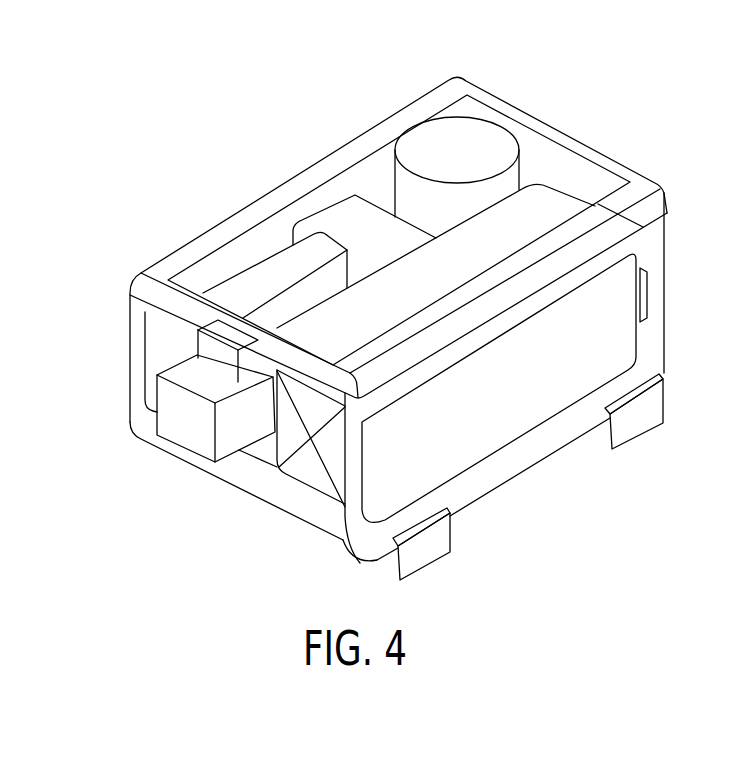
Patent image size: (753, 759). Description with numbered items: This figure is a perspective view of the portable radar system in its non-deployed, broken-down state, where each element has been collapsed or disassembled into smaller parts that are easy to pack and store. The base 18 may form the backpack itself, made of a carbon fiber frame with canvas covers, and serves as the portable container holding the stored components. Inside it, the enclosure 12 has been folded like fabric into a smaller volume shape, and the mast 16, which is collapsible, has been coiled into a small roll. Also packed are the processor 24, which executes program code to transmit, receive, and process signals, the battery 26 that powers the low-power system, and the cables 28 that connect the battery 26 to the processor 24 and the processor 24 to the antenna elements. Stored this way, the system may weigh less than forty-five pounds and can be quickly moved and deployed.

The base 18 is at (108, 175).
The enclosure 12 is at (560, 210).
The mast 16 is at (448, 127).
The battery 26 is at (353, 203).
The cables 28 is at (257, 278).
The processor 24 is at (197, 427).